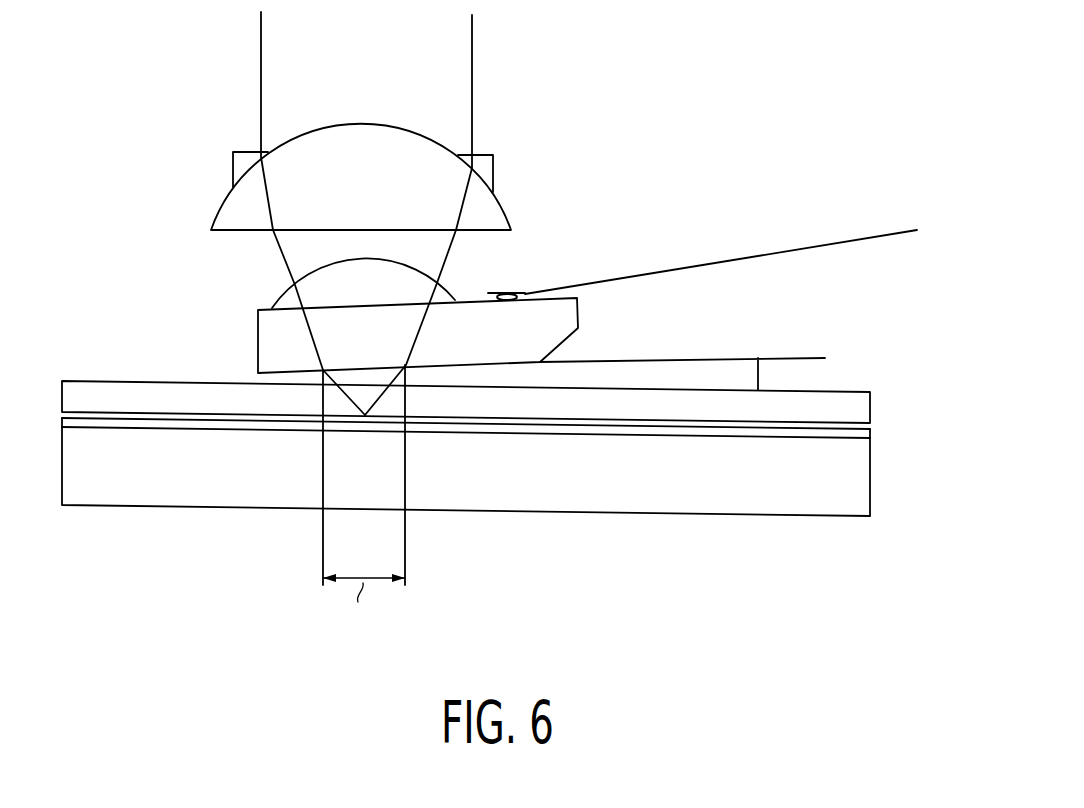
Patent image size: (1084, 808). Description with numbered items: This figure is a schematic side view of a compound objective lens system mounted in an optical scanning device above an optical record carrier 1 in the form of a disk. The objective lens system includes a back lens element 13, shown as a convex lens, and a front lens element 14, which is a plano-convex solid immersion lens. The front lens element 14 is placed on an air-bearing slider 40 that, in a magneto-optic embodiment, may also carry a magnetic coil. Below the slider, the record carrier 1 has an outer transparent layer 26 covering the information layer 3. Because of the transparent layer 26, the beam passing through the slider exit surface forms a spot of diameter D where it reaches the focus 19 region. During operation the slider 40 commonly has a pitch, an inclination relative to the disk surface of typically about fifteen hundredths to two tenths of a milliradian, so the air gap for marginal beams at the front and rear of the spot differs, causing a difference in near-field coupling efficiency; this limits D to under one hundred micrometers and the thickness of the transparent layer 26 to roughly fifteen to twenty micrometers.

The optical record carrier 1 is at (153, 569).
The information layer 3 is at (850, 435).
The back lens element 13 is at (375, 138).
The front lens element 14 is at (313, 286).
The light spot (near-field light) 19 is at (365, 418).
The transparent layer 26 is at (852, 408).
The air-bearing slider 40 is at (803, 316).